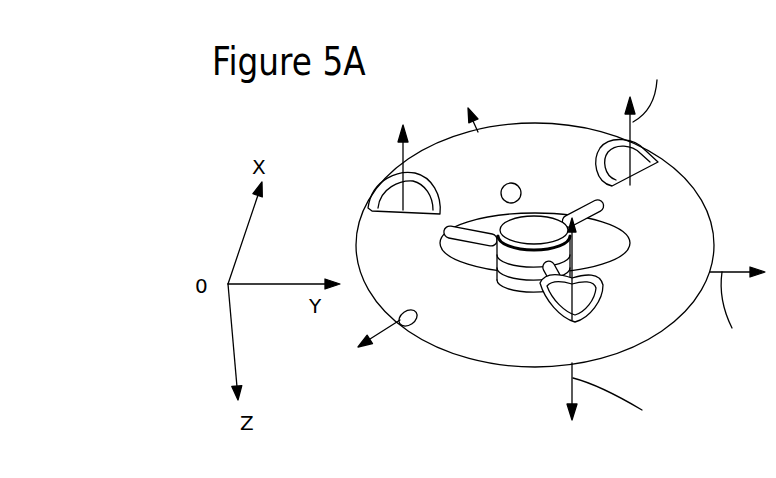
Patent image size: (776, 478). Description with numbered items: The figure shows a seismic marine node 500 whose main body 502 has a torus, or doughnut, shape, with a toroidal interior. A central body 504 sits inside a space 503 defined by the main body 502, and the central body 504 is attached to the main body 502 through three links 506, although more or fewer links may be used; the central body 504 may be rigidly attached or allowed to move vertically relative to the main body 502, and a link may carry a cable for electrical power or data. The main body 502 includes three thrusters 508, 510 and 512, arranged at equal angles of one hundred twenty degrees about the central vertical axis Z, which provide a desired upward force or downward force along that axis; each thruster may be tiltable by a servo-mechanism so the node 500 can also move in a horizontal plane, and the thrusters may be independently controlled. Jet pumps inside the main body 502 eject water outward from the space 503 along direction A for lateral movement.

The node 500 is at (560, 54).
The main body 502 is at (463, 332).
The space 503 is at (470, 250).
The central body 504 is at (540, 227).
The link 506 is at (473, 226).
The thruster 508 is at (638, 155).
The thruster 510 is at (587, 302).
The thruster 512 is at (393, 197).